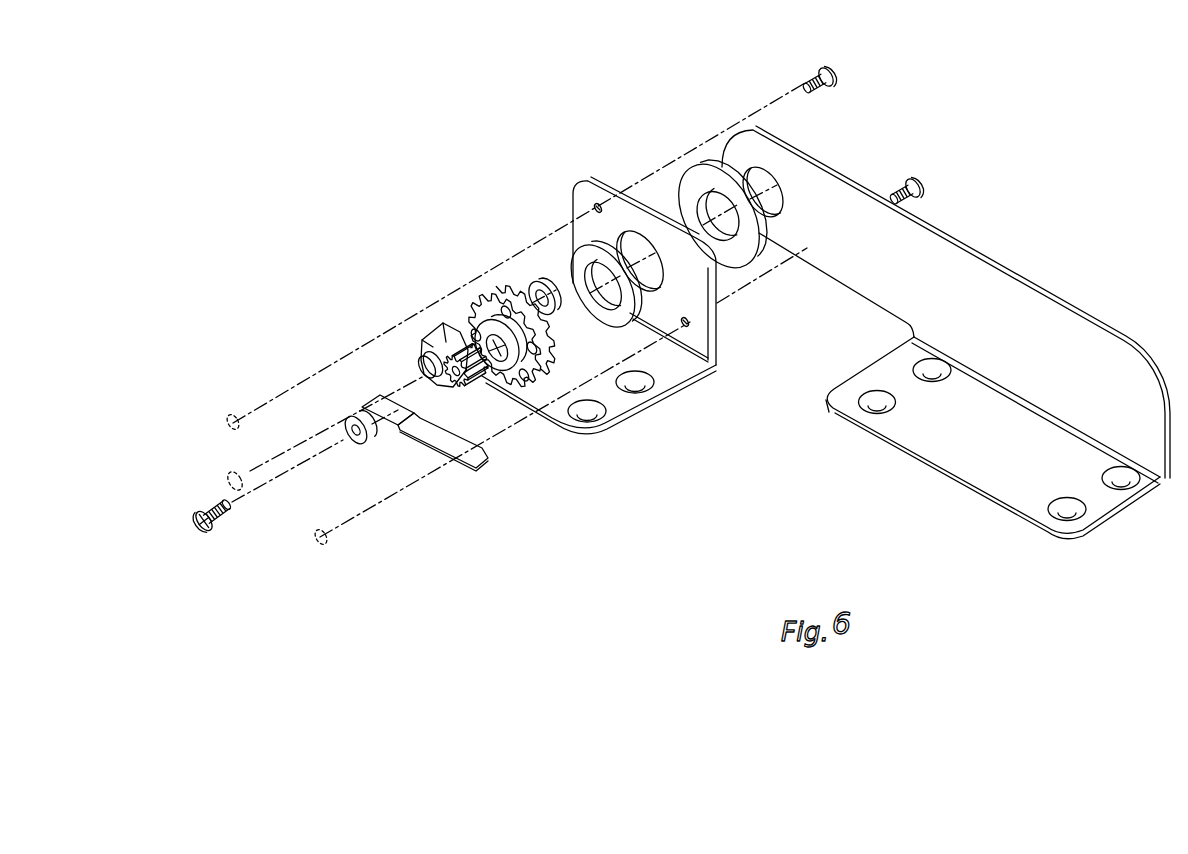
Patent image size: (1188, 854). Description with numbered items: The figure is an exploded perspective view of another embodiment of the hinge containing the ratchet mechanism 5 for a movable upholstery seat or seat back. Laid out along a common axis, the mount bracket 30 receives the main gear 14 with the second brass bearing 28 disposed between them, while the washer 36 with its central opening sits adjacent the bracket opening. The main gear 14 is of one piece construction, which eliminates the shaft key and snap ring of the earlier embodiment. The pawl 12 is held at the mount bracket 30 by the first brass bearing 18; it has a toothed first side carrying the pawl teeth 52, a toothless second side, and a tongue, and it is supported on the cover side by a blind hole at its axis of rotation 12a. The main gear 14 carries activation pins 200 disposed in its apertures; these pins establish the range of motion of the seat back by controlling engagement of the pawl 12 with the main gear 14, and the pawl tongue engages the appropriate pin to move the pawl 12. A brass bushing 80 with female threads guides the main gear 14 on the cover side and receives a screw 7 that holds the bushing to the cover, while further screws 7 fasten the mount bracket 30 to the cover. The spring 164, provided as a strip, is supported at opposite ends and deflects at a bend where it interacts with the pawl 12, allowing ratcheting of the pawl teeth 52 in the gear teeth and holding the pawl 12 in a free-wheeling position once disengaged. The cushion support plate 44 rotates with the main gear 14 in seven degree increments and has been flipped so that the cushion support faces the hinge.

The ratchet mechanism 5 is at (457, 104).
The screw 7 is at (836, 66).
The pawl 12 is at (422, 338).
The axis of rotation 12a is at (252, 470).
The main gear 14 is at (497, 291).
The first brass bearing 18 is at (535, 284).
The second brass bearing 28 is at (572, 264).
The mount bracket 30 is at (597, 180).
The washer 36 is at (683, 215).
The cushion support plate 44 is at (1047, 288).
The pawl teeth 52 is at (463, 390).
The brass bushing 80 is at (350, 413).
The spring 164 is at (388, 397).
The activation pins 200 is at (478, 318).